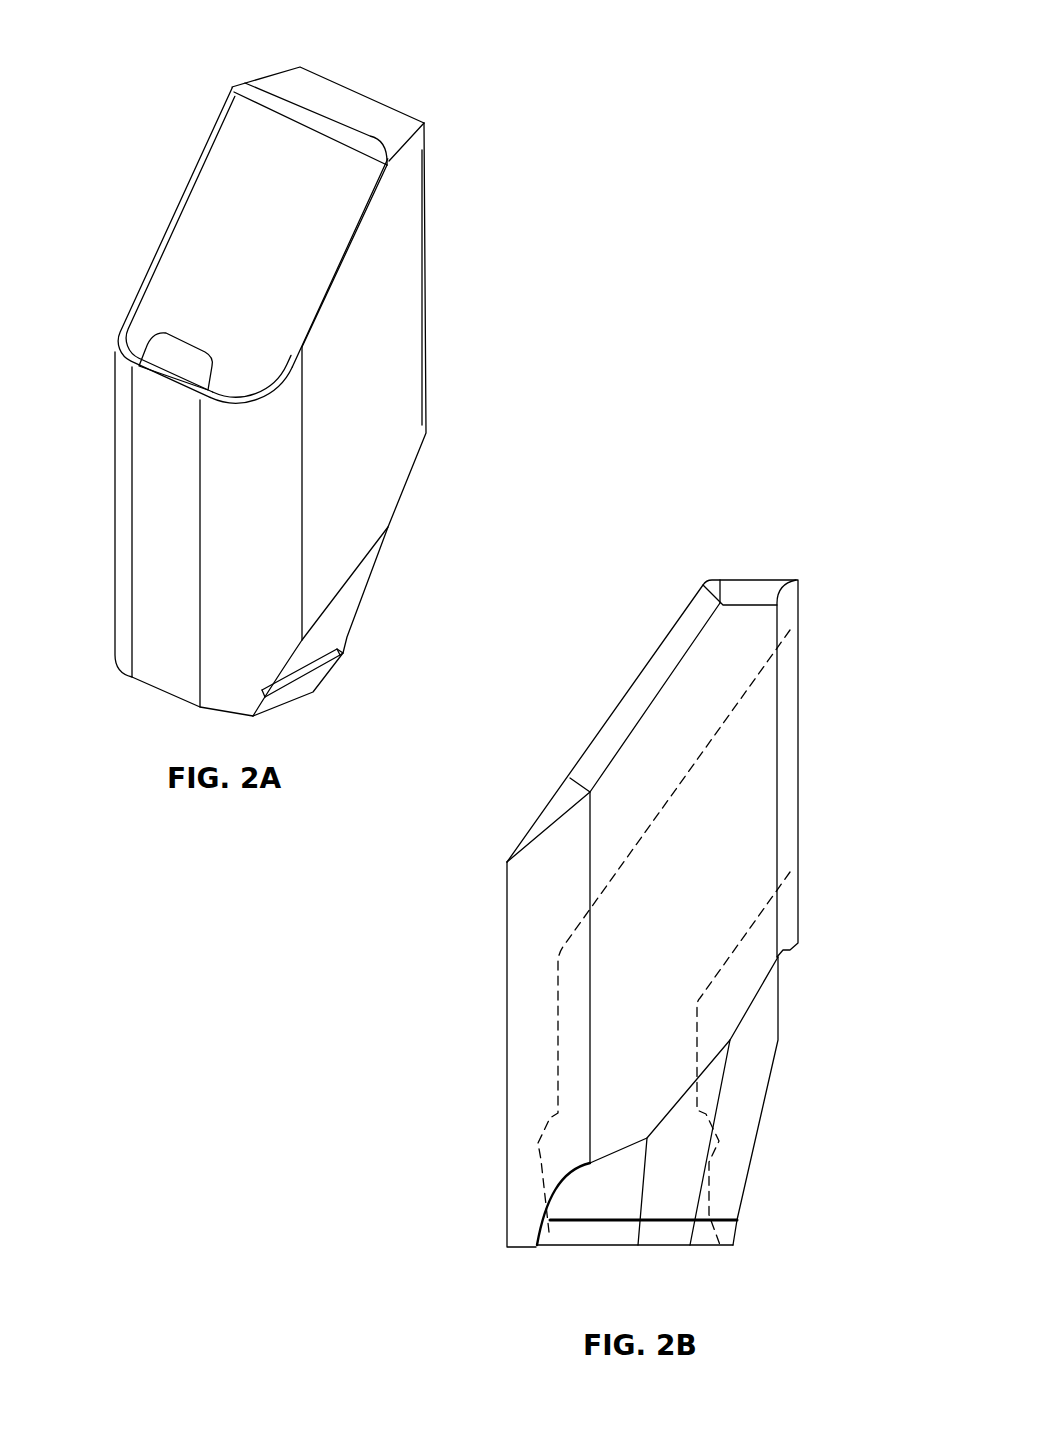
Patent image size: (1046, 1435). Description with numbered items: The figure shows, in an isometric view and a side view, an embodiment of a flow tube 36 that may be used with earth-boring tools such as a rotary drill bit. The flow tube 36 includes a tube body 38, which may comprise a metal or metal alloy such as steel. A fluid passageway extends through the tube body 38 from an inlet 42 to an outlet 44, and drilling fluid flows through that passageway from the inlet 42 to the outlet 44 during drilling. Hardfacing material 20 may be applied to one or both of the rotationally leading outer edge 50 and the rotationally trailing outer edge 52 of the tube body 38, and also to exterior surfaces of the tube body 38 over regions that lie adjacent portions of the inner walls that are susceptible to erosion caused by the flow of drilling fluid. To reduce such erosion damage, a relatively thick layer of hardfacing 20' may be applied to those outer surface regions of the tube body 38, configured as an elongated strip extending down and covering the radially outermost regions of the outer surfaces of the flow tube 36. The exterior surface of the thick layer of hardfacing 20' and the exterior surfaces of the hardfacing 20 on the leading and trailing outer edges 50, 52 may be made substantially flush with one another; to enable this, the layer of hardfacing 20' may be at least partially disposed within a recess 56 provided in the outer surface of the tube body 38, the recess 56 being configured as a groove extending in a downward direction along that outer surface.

In FIG. 2A, the flow tube 36 is at (150, 100).
In FIG. 2B, the flow tube 36 is at (618, 612).
In FIG. 2A, the tube body 38 is at (402, 295).
In FIG. 2B, the tube body 38 is at (652, 742).
In FIG. 2A, the rotationally leading outer edge 50 is at (133, 333).
In FIG. 2A, the rotationally trailing outer edge 52 is at (235, 375).
In FIG. 2A, the recess 56 is at (185, 334).
In FIG. 2A, the hardfacing material 20 is at (199, 483).
In FIG. 2B, the hardfacing material 20 is at (512, 1025).
In FIG. 2A, the relatively thick layer of hardfacing 20' is at (120, 493).
In FIG. 2B, the inlet 42 is at (815, 742).
In FIG. 2B, the outlet 44 is at (578, 1260).